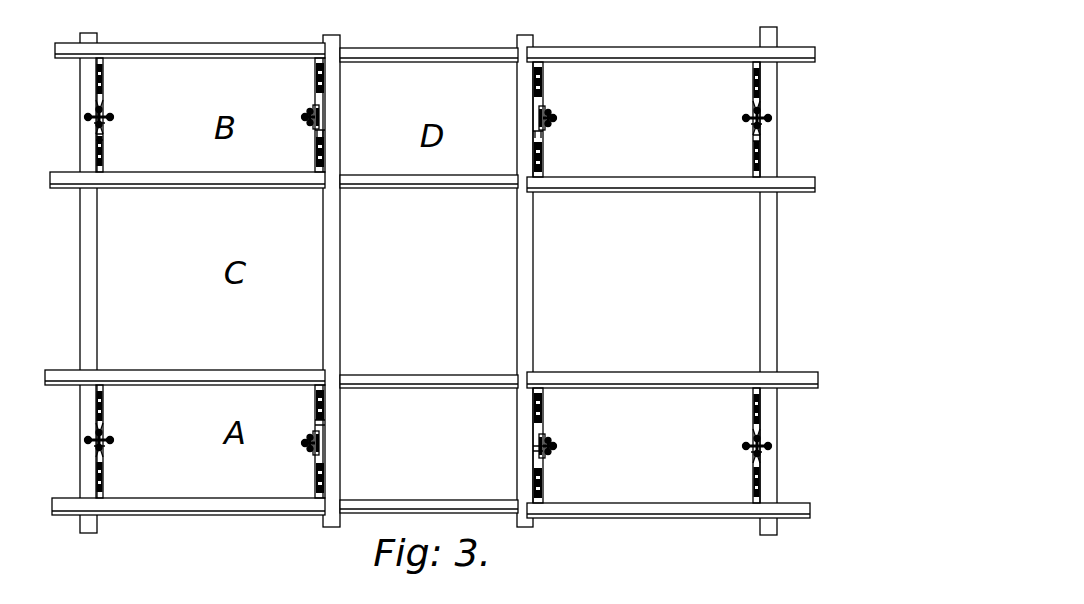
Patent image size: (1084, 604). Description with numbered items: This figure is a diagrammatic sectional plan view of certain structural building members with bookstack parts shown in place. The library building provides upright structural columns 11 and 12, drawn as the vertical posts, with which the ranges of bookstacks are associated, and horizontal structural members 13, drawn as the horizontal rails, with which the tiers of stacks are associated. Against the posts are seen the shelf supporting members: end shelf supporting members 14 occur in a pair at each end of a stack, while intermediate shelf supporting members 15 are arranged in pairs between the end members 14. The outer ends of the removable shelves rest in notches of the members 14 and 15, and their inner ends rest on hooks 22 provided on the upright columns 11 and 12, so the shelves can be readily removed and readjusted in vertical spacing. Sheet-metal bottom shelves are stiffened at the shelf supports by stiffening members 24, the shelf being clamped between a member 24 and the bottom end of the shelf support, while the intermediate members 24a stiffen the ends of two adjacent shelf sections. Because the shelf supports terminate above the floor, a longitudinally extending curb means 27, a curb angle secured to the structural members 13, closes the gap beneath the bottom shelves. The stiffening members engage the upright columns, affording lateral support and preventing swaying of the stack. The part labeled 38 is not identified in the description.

The structural column 11 is at (326, 119).
The structural column 12 is at (105, 123).
The horizontal structural member 13 is at (97, 277).
The end shelf supporting member 14 is at (327, 78).
The intermediate shelf supporting member 15 is at (103, 84).
The hook 22 is at (321, 423).
The stiffening member 24 is at (322, 137).
The intermediate stiffening member 24a is at (104, 138).
The curb means 27 is at (180, 53).
The cross fastener 38 is at (106, 113).